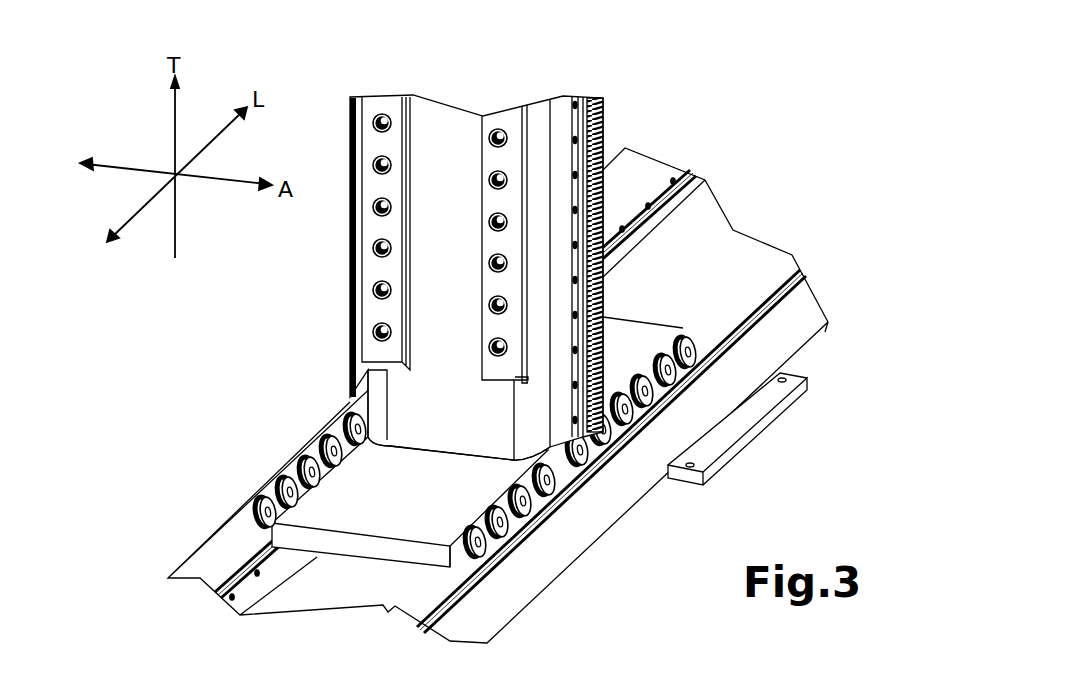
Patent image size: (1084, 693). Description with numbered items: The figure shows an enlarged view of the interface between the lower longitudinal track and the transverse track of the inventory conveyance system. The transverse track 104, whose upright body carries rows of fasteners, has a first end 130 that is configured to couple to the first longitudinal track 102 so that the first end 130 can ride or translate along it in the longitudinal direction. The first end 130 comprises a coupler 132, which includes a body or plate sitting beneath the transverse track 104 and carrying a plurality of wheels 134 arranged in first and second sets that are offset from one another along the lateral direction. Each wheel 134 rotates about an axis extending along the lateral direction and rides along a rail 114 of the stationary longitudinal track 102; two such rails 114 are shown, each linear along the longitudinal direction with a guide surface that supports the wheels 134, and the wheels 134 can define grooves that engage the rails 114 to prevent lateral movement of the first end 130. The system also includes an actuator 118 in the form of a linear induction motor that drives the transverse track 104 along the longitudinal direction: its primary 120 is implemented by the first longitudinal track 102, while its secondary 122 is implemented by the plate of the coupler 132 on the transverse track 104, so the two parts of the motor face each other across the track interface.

The transverse track 104 is at (448, 137).
The primary 120 is at (707, 222).
The actuator 118 is at (450, 417).
The rail 114 is at (810, 220).
The secondary 122 is at (633, 340).
The first end 130 is at (435, 407).
The coupler 132 is at (383, 490).
The wheels 134 is at (287, 470).
The longitudinal track 102 is at (683, 422).